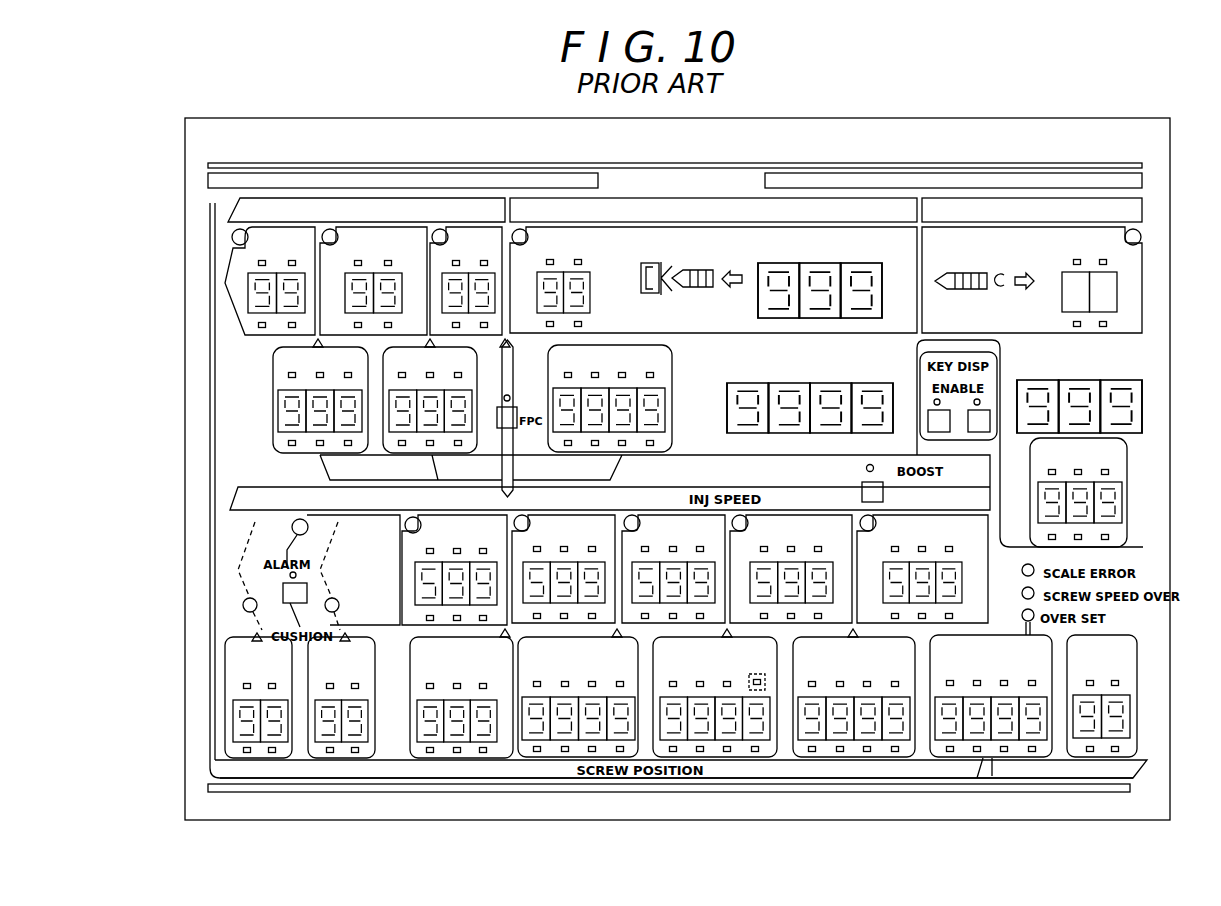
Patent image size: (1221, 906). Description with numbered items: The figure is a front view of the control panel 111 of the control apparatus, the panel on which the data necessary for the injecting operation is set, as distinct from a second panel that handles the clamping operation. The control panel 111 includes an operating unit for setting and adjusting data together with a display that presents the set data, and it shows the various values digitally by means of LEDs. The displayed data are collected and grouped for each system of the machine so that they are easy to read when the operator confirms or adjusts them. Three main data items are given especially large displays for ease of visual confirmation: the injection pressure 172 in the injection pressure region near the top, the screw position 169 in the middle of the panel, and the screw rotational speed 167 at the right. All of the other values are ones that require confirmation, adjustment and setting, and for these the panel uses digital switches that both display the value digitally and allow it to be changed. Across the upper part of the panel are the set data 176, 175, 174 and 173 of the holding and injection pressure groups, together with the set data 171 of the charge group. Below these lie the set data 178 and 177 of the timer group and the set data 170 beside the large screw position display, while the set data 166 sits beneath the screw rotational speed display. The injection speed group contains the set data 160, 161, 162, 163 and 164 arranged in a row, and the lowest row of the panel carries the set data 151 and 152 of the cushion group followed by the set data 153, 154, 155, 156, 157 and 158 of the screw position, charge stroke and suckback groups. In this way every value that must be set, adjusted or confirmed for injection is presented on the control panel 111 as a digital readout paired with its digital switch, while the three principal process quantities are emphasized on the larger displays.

The control panel 111 is at (177, 183).
The set data 151 is at (225, 690).
The set data 152 is at (375, 692).
The set data 153 is at (462, 758).
The set data 154 is at (560, 758).
The set data 155 is at (730, 758).
The set data 156 is at (855, 758).
The set data 157 is at (1008, 758).
The set data 158 is at (1137, 707).
The set data 160 is at (503, 548).
The set data 161 is at (603, 546).
The set data 162 is at (715, 546).
The set data 163 is at (791, 569).
The set data 164 is at (985, 559).
The set data 166 is at (1127, 485).
The screw rotational speed 167 is at (1138, 393).
The screw position 169 is at (727, 395).
The set data 170 is at (672, 420).
The set data 171 is at (1127, 282).
The injection pressure 172 is at (883, 267).
The set data 173 is at (600, 273).
The set data 174 is at (495, 237).
The set data 175 is at (415, 238).
The set data 176 is at (308, 237).
The set data 177 is at (477, 428).
The set data 178 is at (275, 442).